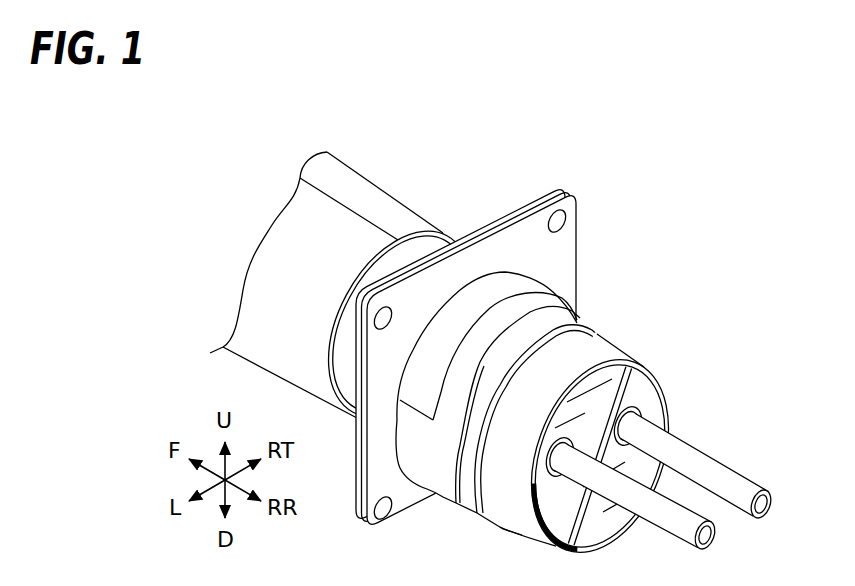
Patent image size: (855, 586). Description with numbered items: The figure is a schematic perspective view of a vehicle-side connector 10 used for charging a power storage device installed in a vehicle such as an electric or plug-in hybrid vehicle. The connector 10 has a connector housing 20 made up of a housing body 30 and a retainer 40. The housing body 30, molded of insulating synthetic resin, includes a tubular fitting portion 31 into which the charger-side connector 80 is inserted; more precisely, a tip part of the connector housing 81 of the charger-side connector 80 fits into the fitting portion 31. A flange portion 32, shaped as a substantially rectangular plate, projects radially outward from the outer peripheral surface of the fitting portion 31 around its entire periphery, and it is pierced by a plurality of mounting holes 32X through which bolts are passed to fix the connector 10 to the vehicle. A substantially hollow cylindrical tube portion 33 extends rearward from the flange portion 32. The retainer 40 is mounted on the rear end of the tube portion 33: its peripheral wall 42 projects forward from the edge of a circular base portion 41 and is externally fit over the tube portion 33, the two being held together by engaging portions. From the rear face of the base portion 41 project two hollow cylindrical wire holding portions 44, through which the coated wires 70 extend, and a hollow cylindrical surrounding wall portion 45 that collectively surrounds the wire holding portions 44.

The vehicle-side connector 10 is at (547, 360).
The connector housing 20 is at (505, 360).
The housing body 30 is at (471, 346).
The fitting portion 31 is at (481, 334).
The flange portion 32 is at (533, 192).
The mounting holes 32X is at (590, 187).
The tube portion 33 is at (440, 483).
The retainer 40 is at (584, 410).
The base portion 41 is at (500, 529).
The peripheral wall 42 is at (466, 503).
The wire holding portions 44 is at (643, 403).
The surrounding wall portion 45 is at (600, 364).
The wire 70 is at (760, 523).
The charger-side connector 80 is at (357, 169).
The connector housing 81 is at (295, 198).